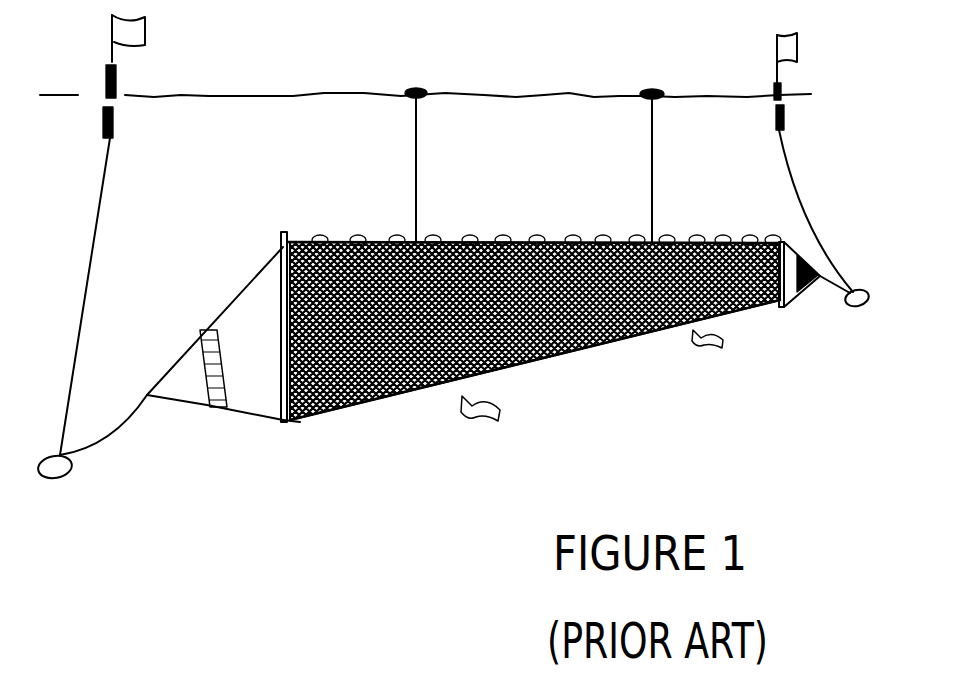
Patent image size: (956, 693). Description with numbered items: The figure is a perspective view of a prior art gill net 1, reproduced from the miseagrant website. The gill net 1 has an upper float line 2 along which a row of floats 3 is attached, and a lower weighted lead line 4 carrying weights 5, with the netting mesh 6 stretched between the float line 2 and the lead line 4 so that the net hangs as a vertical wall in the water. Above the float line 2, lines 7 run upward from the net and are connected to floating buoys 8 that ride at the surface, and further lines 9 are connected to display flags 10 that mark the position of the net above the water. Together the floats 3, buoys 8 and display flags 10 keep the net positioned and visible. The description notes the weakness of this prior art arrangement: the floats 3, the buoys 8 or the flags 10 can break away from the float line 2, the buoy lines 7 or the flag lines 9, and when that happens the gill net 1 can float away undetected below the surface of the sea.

The gill net 1 is at (854, 268).
The float line 2 is at (302, 240).
The floats 3 is at (320, 236).
The lead line 4 is at (733, 317).
The weights 5 is at (607, 352).
The netting mesh 6 is at (323, 421).
The lines 7 is at (418, 152).
The floating buoys 8 is at (418, 87).
The lines 9 is at (87, 278).
The display flags 10 is at (146, 30).